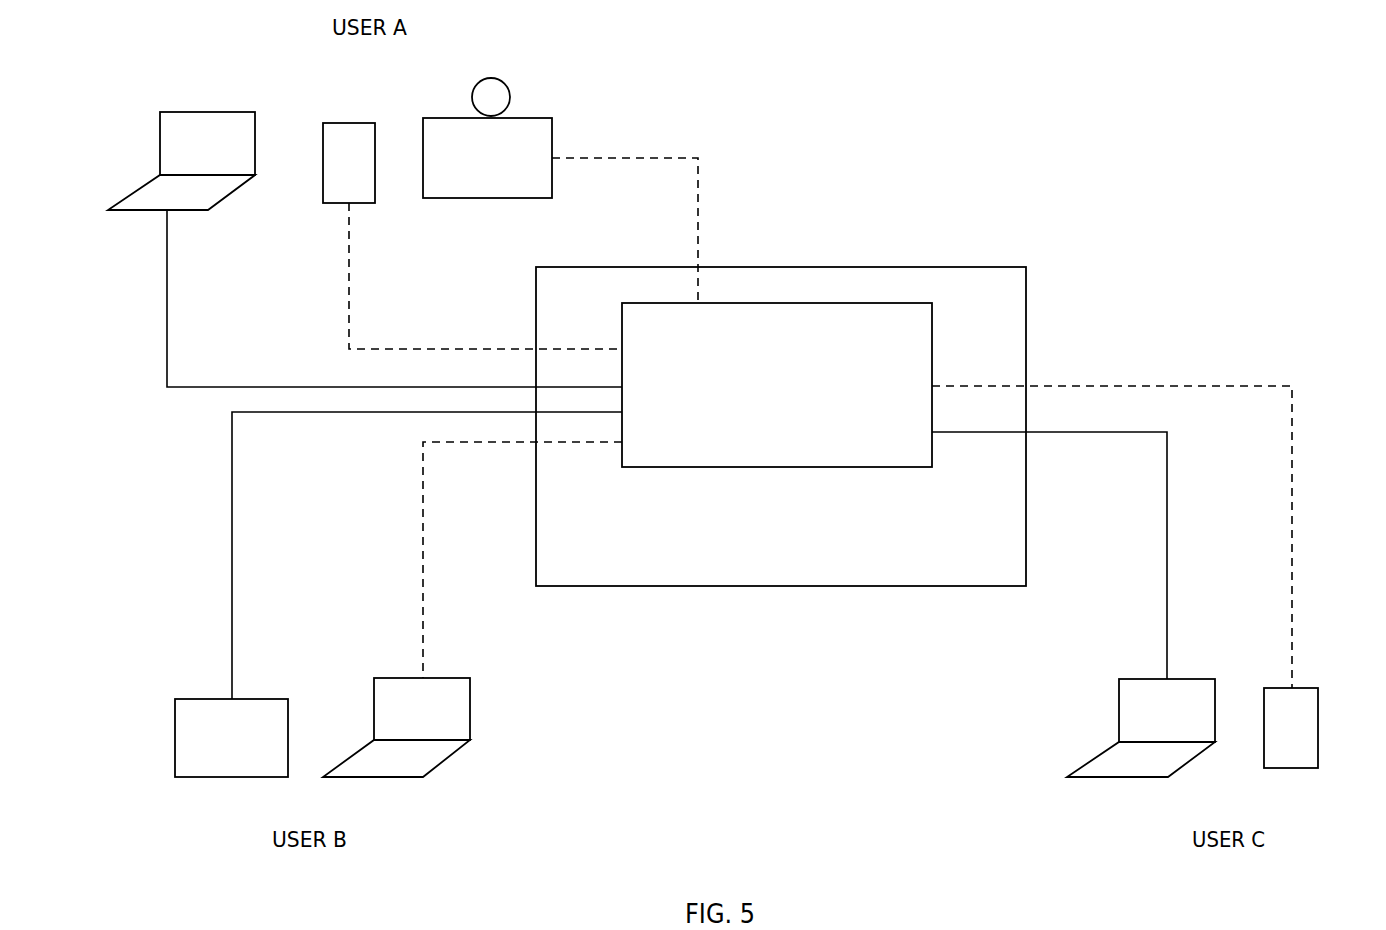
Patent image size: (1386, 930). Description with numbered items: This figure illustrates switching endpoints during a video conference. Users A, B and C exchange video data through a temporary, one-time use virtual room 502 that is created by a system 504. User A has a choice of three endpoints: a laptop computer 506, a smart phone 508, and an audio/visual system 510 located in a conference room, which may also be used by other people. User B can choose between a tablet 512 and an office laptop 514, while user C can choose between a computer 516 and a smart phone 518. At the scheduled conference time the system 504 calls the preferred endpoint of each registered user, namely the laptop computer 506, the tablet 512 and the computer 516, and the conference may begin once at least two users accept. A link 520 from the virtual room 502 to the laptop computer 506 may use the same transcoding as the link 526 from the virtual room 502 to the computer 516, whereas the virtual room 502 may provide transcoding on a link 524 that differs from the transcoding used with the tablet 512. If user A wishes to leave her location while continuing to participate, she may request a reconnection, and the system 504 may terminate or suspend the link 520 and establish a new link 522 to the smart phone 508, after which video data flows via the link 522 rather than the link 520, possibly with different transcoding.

The virtual room 502 is at (960, 264).
The system 504 is at (830, 303).
The laptop computer 506 is at (188, 110).
The smart phone 508 is at (333, 122).
The audio/visual (AV) system 510 is at (530, 117).
The tablet 512 is at (275, 698).
The office laptop 514 is at (452, 677).
The computer 516 is at (1183, 678).
The smart phone 518 is at (1320, 722).
The link 520 is at (167, 348).
The new link 522 is at (349, 302).
The link 524 is at (232, 582).
The link 526 is at (1167, 517).